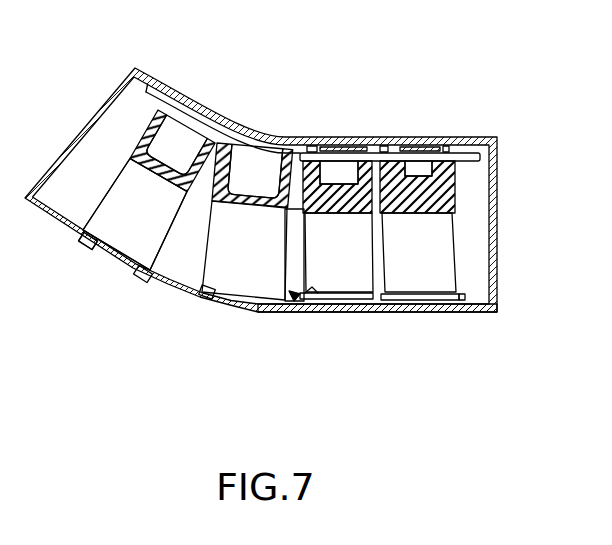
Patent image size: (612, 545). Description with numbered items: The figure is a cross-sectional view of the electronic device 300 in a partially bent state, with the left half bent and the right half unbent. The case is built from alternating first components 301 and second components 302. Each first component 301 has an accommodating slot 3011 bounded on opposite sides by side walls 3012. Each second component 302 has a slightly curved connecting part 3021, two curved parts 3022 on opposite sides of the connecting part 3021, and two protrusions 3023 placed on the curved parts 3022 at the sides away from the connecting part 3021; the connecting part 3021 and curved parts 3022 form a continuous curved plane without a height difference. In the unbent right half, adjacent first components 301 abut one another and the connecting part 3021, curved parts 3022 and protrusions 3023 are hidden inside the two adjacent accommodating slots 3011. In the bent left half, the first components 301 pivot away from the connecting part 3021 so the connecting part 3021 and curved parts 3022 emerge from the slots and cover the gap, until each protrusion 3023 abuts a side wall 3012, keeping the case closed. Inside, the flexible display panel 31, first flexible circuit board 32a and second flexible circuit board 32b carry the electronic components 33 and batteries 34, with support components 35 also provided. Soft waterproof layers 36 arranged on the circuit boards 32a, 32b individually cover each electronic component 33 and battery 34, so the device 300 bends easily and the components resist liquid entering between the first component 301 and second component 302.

The electronic device 300 is at (541, 77).
The flexible display panel 31 is at (147, 86).
The first flexible circuit board 32a is at (470, 157).
The second flexible circuit board 32b is at (172, 112).
The electronic component 33 is at (350, 168).
The battery 34 is at (193, 147).
The support component 35 is at (325, 143).
The soft waterproof layer 36 is at (147, 130).
The first component 301 is at (232, 385).
The second component 302 is at (367, 290).
The accommodating slot 3011 is at (299, 298).
The side wall 3012 is at (258, 303).
The connecting part 3021 is at (117, 262).
The curved part 3022 is at (90, 250).
The protrusion 3023 is at (83, 243).